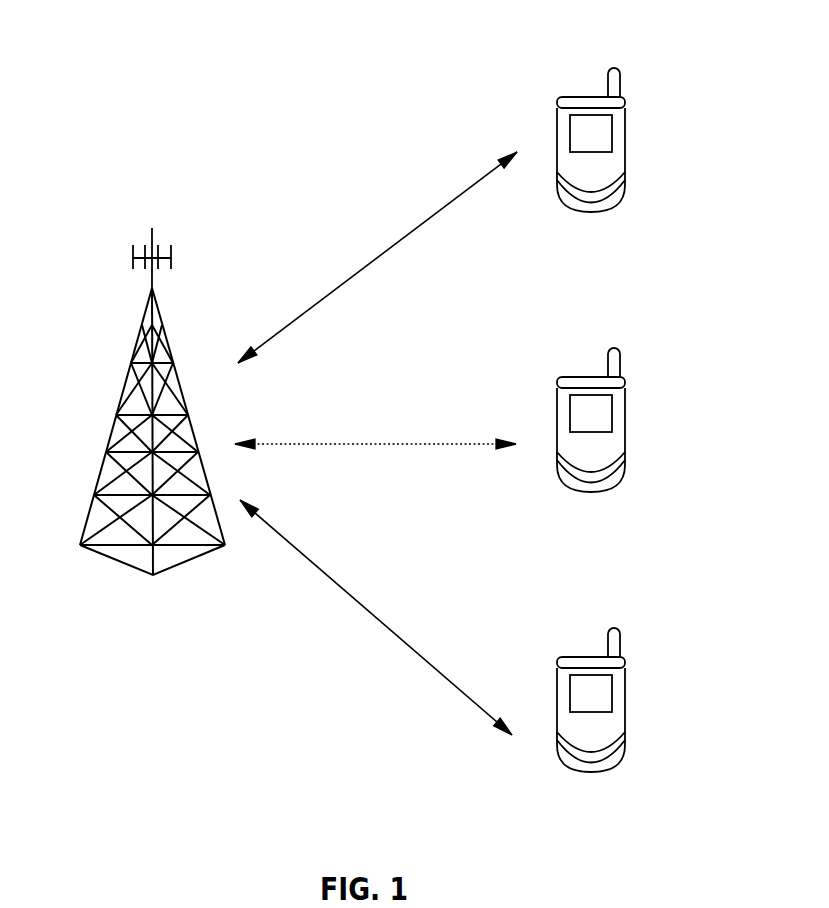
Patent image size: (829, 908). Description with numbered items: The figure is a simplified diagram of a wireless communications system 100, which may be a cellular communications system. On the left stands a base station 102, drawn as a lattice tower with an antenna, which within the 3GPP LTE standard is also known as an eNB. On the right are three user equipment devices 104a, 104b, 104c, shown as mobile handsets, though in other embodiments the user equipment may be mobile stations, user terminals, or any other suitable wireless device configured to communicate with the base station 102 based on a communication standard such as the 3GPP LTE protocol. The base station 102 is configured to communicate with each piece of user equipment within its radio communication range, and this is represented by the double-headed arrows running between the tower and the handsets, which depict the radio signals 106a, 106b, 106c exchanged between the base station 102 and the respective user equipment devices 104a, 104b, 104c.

The wireless communications system 100 is at (382, 26).
The base station 102 is at (118, 283).
The user equipment device 104a is at (628, 113).
The user equipment device 104b is at (624, 416).
The user equipment device 104c is at (624, 696).
The radio signal 106a is at (377, 257).
The radio signal 106b is at (375, 422).
The radio signal 106c is at (376, 617).